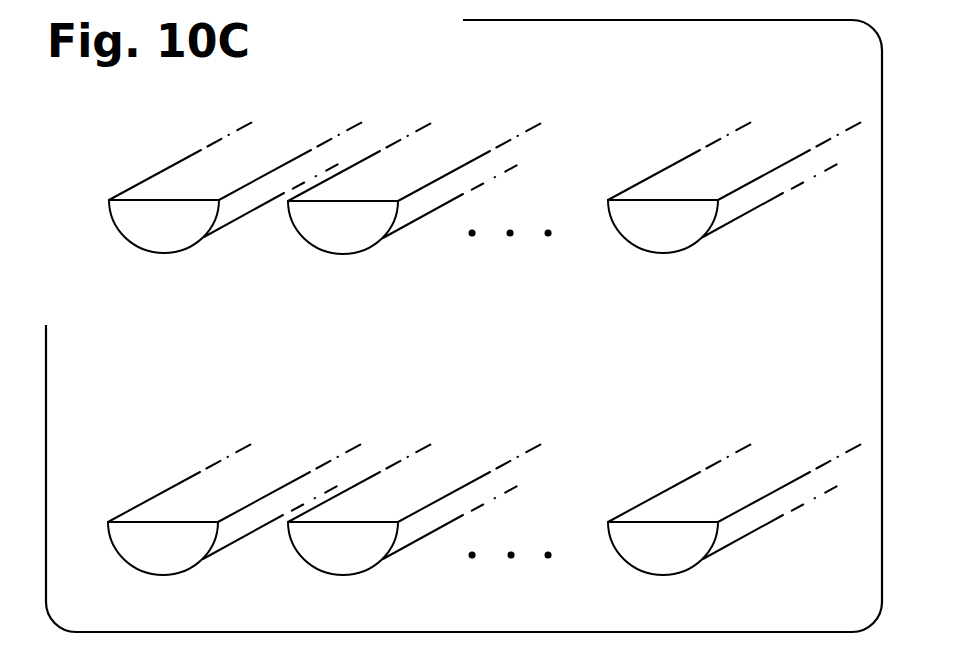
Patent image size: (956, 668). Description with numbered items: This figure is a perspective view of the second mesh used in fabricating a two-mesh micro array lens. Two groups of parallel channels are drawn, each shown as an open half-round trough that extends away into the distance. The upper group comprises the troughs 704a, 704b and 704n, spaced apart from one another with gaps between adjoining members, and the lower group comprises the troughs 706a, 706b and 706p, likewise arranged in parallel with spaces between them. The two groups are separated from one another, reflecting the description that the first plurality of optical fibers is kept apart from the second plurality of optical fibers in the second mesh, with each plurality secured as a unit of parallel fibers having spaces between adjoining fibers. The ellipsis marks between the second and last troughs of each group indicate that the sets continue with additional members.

The first trough of first set 704a is at (235, 188).
The second trough of first set 704b is at (414, 189).
The nth trough of first set 704n is at (734, 188).
The first trough of second set 706a is at (234, 510).
The second trough of second set 706b is at (414, 510).
The pth trough of second set 706p is at (734, 510).